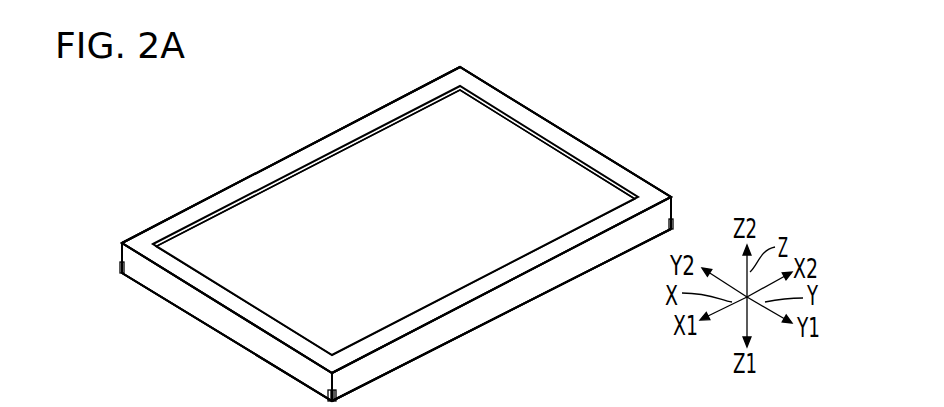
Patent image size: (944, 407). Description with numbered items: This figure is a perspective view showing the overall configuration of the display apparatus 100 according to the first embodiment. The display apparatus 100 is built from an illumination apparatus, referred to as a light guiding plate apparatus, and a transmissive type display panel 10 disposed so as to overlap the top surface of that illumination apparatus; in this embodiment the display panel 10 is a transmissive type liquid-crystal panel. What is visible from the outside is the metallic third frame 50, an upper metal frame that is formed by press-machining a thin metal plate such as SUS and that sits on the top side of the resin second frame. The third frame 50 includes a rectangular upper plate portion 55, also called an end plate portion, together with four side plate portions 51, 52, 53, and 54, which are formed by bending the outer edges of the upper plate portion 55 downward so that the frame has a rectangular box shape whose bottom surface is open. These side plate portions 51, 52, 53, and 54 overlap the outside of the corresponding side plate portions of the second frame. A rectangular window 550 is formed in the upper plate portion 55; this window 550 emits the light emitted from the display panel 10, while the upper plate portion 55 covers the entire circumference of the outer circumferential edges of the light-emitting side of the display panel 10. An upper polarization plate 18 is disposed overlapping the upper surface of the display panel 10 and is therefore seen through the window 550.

The display apparatus 100 is at (204, 104).
The display panel 10 is at (318, 192).
The upper polarization plate 18 is at (413, 147).
The third frame 50 is at (508, 79).
The side plate portion 51 is at (533, 285).
The side plate portion 52 is at (187, 208).
The side plate portion 53 is at (213, 320).
The side plate portion 54 is at (630, 168).
The upper plate portion 55 is at (585, 155).
The rectangular window 550 is at (542, 132).